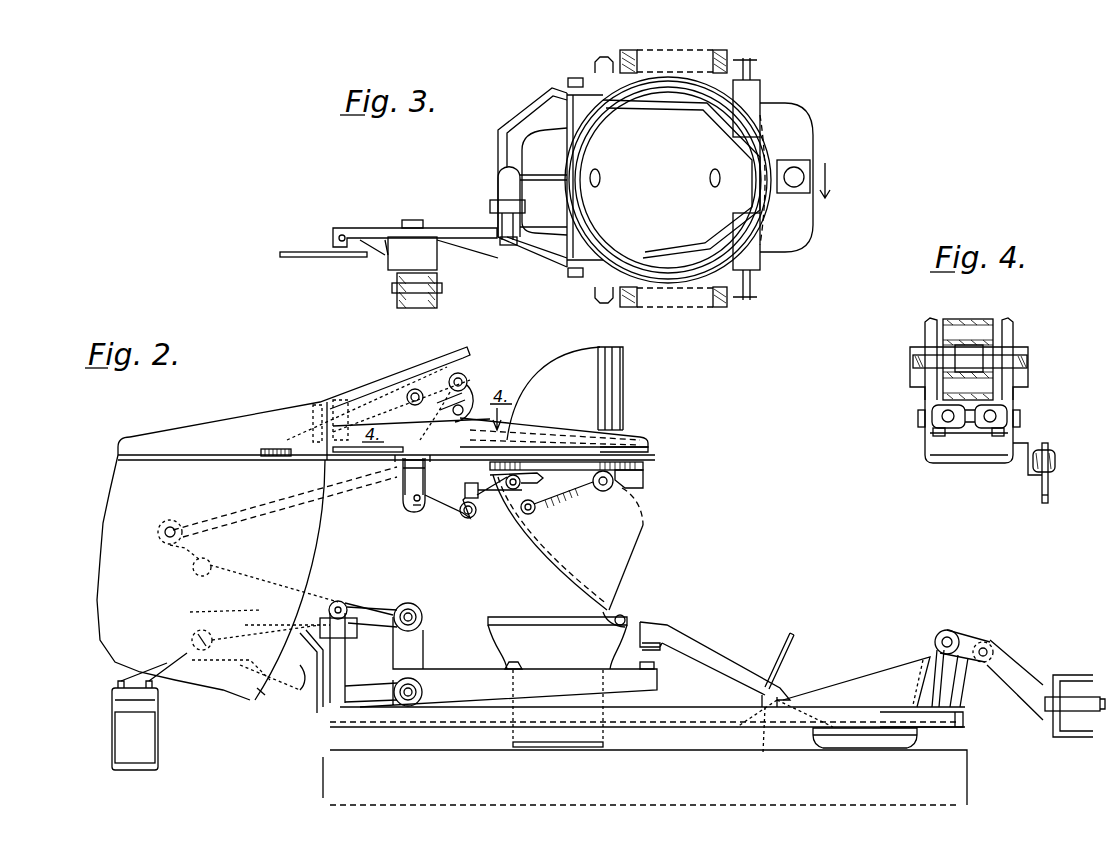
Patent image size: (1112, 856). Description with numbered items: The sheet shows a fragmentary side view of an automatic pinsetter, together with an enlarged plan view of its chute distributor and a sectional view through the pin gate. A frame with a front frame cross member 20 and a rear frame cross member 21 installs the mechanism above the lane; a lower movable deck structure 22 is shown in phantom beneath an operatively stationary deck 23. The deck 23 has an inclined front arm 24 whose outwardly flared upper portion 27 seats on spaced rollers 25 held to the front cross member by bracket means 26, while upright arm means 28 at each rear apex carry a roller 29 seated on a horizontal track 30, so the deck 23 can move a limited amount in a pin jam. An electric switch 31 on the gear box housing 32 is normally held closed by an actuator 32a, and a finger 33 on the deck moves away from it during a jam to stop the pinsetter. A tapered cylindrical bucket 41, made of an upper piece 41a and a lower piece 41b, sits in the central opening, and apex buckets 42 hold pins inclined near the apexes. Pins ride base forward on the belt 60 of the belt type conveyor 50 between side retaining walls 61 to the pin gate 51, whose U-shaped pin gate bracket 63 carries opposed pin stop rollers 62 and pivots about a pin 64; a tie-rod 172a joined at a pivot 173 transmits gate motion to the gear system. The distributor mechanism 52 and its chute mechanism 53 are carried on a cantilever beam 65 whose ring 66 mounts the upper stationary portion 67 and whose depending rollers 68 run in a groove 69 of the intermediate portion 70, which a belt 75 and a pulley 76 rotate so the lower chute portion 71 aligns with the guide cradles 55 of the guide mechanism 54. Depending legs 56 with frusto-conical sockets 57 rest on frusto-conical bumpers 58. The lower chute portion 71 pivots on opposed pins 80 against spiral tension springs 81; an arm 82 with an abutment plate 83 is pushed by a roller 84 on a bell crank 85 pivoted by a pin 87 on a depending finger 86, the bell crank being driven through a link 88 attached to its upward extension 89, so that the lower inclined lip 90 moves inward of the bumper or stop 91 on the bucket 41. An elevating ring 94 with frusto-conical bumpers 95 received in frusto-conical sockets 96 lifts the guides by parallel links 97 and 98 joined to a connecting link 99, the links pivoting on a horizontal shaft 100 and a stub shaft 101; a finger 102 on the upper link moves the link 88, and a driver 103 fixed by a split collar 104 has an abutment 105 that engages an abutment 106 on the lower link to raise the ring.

In FIG. 2, the front frame cross member 20 is at (1060, 740).
In FIG. 2, the rear frame cross member 21 is at (128, 768).
In FIG. 2, the lower movable deck structure 22 is at (967, 770).
In FIG. 2, the operatively stationary deck 23 is at (965, 718).
In FIG. 2, the front arm 24 is at (962, 690).
In FIG. 2, the rollers 25 is at (945, 630).
In FIG. 2, the bracket means 26 is at (1018, 668).
In FIG. 2, the outwardly flared upper portion 27 is at (975, 634).
In FIG. 2, the upright arm means 28 is at (338, 690).
In FIG. 2, the roller 29 is at (340, 600).
In FIG. 2, the track 30 is at (388, 627).
In FIG. 2, the electric switch 31 is at (300, 675).
In FIG. 2, the gear box housing 32 is at (267, 540).
In FIG. 2, the switch actuator 32a is at (287, 611).
In FIG. 2, the finger 33 is at (352, 640).
In FIG. 2, the tapered cylindrical bucket 41 is at (503, 739).
In FIG. 2, the upper piece 41a is at (550, 625).
In FIG. 2, the lower piece 41b is at (548, 748).
In FIG. 2, the apex bucket 42 is at (870, 674).
In FIG. 2, the belt type conveyor 50 is at (304, 421).
In FIG. 2, the pin gate 51 is at (470, 367).
In FIG. 2, the distributor mechanism 52 is at (656, 390).
In FIG. 2, the chute mechanism 53 is at (625, 428).
In FIG. 2, the guide mechanism 54 is at (742, 626).
In FIG. 2, the guide cradle 55 is at (748, 662).
In FIG. 2, the depending leg 56 is at (760, 694).
In FIG. 2, the frusto-conical socket 57 is at (752, 717).
In FIG. 2, the frusto-conical bumper 58 is at (762, 750).
In FIG. 4, the belt 60 is at (980, 322).
In FIG. 2, the belt 60 is at (352, 392).
In FIG. 2, the side retaining walls 61 is at (370, 392).
In FIG. 4, the pin stop roller 62 is at (927, 325).
In FIG. 4, the U-shaped pin gate bracket 63 is at (1016, 343).
In FIG. 2, the U-shaped pin gate bracket 63 is at (425, 392).
In FIG. 4, the pin 64 is at (1022, 415).
In FIG. 2, the pin 64 is at (400, 470).
In FIG. 2, the cantilever beam 65 is at (548, 425).
In FIG. 2, the ring 66 is at (650, 440).
In FIG. 2, the upper stationary portion 67 is at (578, 360).
In FIG. 2, the depending rollers 68 is at (645, 467).
In FIG. 2, the groove 69 is at (614, 488).
In FIG. 3, the intermediate portion 70 is at (762, 82).
In FIG. 2, the intermediate portion 70 is at (646, 478).
In FIG. 3, the lower chute portion 71 is at (597, 67).
In FIG. 2, the lower chute portion 71 is at (640, 520).
In FIG. 2, the belt 75 is at (290, 462).
In FIG. 2, the pulley 76 is at (270, 449).
In FIG. 3, the pins 80 is at (566, 80).
In FIG. 2, the pins 80 is at (515, 490).
In FIG. 3, the spiral tension springs 81 is at (727, 55).
In FIG. 2, the spiral tension springs 81 is at (565, 498).
In FIG. 3, the arm 82 is at (540, 105).
In FIG. 2, the arm 82 is at (465, 490).
In FIG. 3, the abutment plate 83 is at (512, 177).
In FIG. 2, the abutment plate 83 is at (522, 513).
In FIG. 3, the roller 84 is at (500, 200).
In FIG. 2, the roller 84 is at (462, 518).
In FIG. 3, the bell crank 85 is at (447, 221).
In FIG. 2, the bell crank 85 is at (418, 510).
In FIG. 3, the depending finger 86 is at (395, 302).
In FIG. 2, the depending finger 86 is at (403, 495).
In FIG. 2, the pin 87 is at (405, 510).
In FIG. 3, the link 88 is at (305, 250).
In FIG. 2, the link 88 is at (345, 494).
In FIG. 3, the upward extension 89 is at (385, 250).
In FIG. 2, the upward extension 89 is at (428, 475).
In FIG. 2, the lower inclined lip 90 is at (620, 600).
In FIG. 2, the bumper or stop 91 is at (632, 617).
In FIG. 2, the elevating ring 94 is at (442, 680).
In FIG. 2, the frusto-conical bumpers 95 is at (518, 668).
In FIG. 2, the frusto-conical sockets 96 is at (652, 637).
In FIG. 2, the lower link 97 is at (371, 716).
In FIG. 2, the upper link 98 is at (380, 605).
In FIG. 2, the connecting link 99 is at (418, 632).
In FIG. 2, the horizontal shaft 100 is at (192, 637).
In FIG. 2, the stub shaft 101 is at (192, 570).
In FIG. 2, the finger 102 is at (172, 548).
In FIG. 2, the driver 103 is at (245, 685).
In FIG. 2, the split collar 104 is at (225, 606).
In FIG. 2, the abutment 105 is at (258, 695).
In FIG. 2, the abutment 106 is at (268, 690).
In FIG. 4, the tie-rod 172a is at (1040, 496).
In FIG. 2, the tie-rod 172a is at (401, 421).
In FIG. 4, the pivot 173 is at (1054, 452).